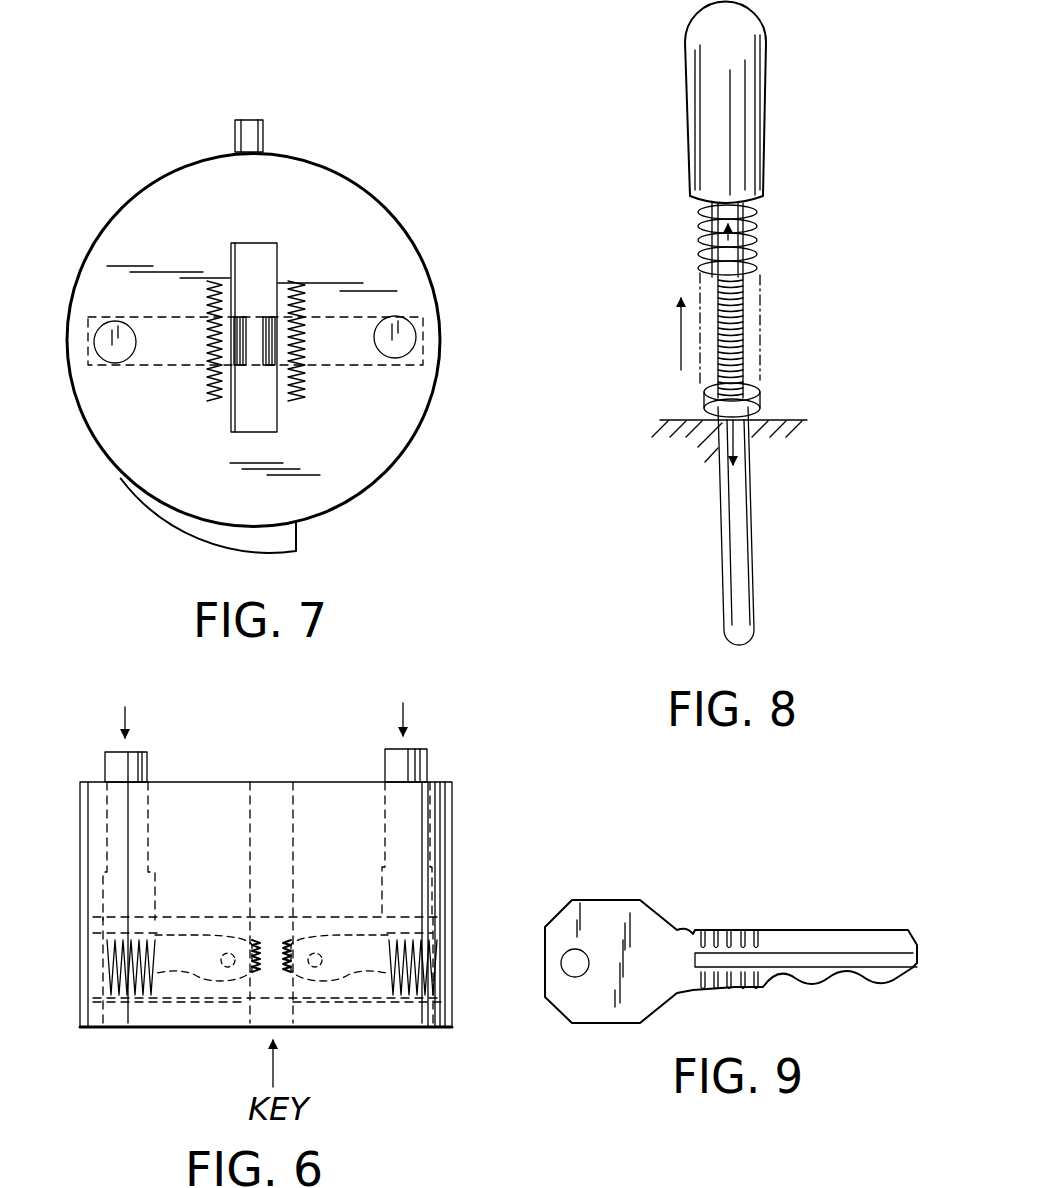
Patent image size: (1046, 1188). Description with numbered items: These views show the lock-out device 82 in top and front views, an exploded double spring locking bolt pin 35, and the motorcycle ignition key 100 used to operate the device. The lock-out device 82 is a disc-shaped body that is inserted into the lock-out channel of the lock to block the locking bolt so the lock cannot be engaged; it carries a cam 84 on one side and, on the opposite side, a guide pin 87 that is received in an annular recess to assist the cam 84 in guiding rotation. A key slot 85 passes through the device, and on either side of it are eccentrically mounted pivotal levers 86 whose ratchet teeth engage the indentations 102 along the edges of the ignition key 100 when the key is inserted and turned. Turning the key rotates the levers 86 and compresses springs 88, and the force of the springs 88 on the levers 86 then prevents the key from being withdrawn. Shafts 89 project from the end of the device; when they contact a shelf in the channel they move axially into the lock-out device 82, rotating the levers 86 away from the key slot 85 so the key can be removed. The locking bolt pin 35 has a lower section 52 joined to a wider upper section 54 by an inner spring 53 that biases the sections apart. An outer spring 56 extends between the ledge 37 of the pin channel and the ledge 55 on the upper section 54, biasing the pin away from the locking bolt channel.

In FIG. 8, the locking bolt pin 35 is at (686, 210).
In FIG. 8, the ledge 37 is at (697, 420).
In FIG. 8, the lower section 52 is at (750, 538).
In FIG. 8, the inner spring 53 is at (743, 328).
In FIG. 8, the upper section 54 is at (763, 112).
In FIG. 8, the ledge 55 is at (762, 197).
In FIG. 8, the outer spring 56 is at (757, 253).
In FIG. 7, the lock-out device 82 is at (455, 339).
In FIG. 7, the cam 84 is at (235, 548).
In FIG. 7, the key slot 85 is at (277, 413).
In FIG. 6, the pivotal lever 86 is at (337, 920).
In FIG. 7, the guide pin 87 is at (235, 132).
In FIG. 6, the spring 88 is at (375, 1047).
In FIG. 7, the shaft 89 is at (107, 348).
In FIG. 6, the shaft 89 is at (138, 772).
In FIG. 9, the ignition key 100 is at (608, 910).
In FIG. 9, the indentations 102 is at (756, 932).